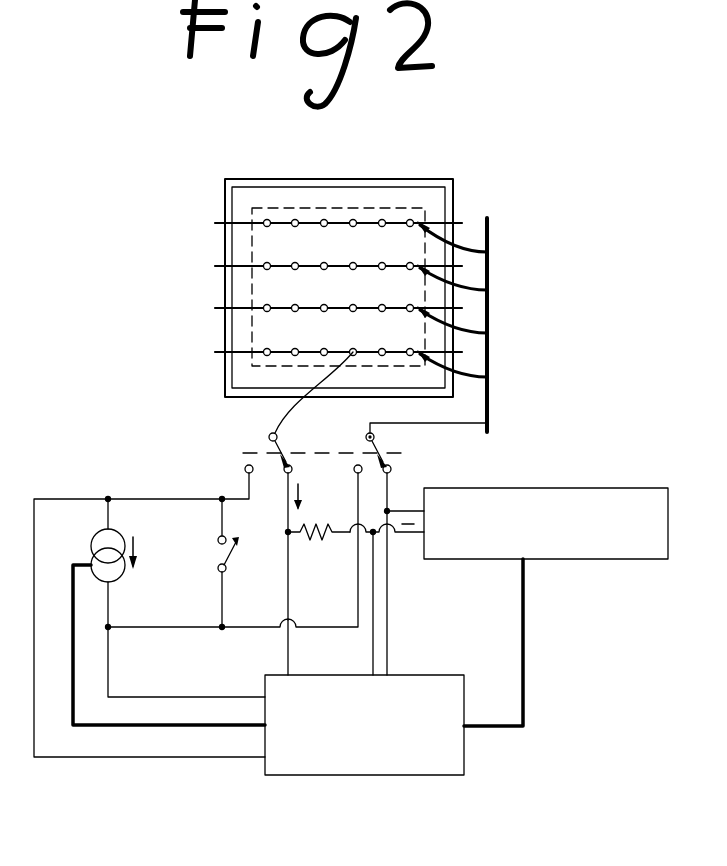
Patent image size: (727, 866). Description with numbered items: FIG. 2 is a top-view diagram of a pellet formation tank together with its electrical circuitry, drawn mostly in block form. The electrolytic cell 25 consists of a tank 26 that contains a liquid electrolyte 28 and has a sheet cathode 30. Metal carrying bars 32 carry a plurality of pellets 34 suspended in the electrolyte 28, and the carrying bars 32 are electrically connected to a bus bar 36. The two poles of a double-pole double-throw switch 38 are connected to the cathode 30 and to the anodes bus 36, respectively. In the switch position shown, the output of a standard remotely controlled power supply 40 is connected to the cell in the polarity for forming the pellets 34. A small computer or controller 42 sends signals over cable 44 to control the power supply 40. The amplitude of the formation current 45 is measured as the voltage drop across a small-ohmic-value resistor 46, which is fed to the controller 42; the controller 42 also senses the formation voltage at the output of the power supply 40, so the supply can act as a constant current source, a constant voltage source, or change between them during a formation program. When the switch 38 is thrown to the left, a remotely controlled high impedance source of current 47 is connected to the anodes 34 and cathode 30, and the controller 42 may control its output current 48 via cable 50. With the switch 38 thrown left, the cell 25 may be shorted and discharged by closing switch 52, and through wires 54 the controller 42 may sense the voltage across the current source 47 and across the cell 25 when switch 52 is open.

The electrolytic cell 25 is at (210, 408).
The tank 26 is at (445, 197).
The liquid electrolyte 28 is at (240, 195).
The sheet cathode 30 is at (252, 366).
The metal carrying bars 32 is at (215, 223).
The pellets 34 is at (354, 262).
The bus bar 36 is at (489, 363).
The double-pole double-throw switch 38 is at (258, 452).
The remotely controlled power supply 40 is at (617, 557).
The controller 42 is at (366, 757).
The cable 44 is at (523, 675).
The formation current 45 is at (298, 484).
The small-ohmic-value resistor 46 is at (320, 540).
The high impedance source of current 47 is at (100, 540).
The output current 48 is at (140, 540).
The cable 50 is at (70, 656).
The switch 52 is at (241, 563).
The wires 54 is at (112, 757).